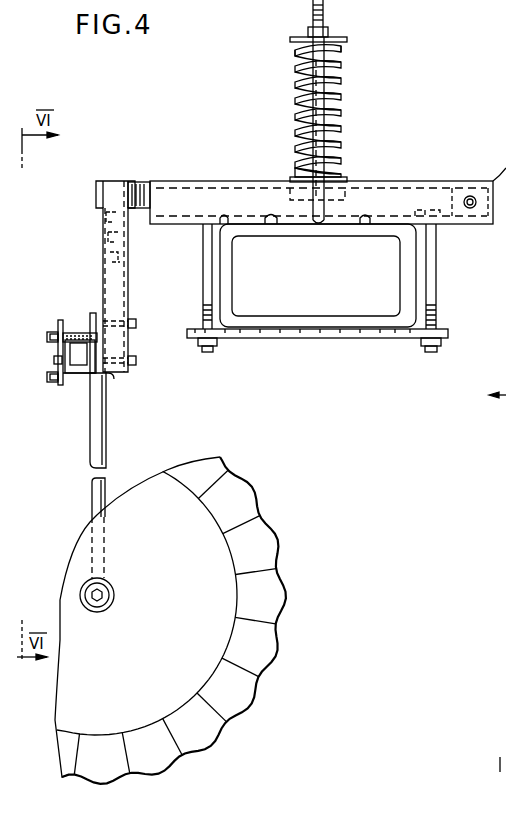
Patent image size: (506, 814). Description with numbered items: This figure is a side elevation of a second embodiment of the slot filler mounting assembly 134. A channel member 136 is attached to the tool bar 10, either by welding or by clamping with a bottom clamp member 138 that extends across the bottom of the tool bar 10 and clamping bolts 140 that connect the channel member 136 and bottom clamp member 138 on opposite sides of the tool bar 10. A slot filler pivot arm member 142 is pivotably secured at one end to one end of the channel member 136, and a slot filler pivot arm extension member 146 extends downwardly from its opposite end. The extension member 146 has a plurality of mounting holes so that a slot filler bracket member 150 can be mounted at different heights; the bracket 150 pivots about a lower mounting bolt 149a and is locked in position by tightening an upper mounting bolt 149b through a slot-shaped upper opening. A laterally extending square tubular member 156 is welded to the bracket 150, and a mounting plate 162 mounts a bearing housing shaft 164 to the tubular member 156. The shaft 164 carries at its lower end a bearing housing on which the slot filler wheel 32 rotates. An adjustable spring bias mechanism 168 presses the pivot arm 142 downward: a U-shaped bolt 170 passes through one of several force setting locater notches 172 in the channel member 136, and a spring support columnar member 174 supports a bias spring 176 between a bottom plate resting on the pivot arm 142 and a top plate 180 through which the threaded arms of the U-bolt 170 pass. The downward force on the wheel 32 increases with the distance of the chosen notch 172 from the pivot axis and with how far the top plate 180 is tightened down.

The tool bar 10 is at (406, 332).
The slot filler wheel 32 is at (262, 553).
The slot filler mounting assembly 134 is at (216, 170).
The channel member 136 is at (455, 160).
The bottom clamp member 138 is at (445, 340).
The clamping bolts 140 is at (437, 300).
The slot filler pivot arm member 142 is at (138, 200).
The slot filler pivot arm extension member 146 is at (131, 235).
The lower mounting bolt 149a is at (133, 358).
The upper mounting bolt 149b is at (132, 321).
The slot filler bracket member 150 is at (96, 313).
The square tubular member 156 is at (82, 343).
The mounting plate 162 is at (62, 390).
The bearing housing shaft 164 is at (107, 438).
The adjustable spring bias mechanism 168 is at (348, 107).
The U-shaped bolt 170 is at (300, 91).
The force setting locater notch 172 is at (366, 214).
The spring support columnar member 174 is at (330, 122).
The bias spring 176 is at (300, 123).
The top plate 180 is at (337, 36).